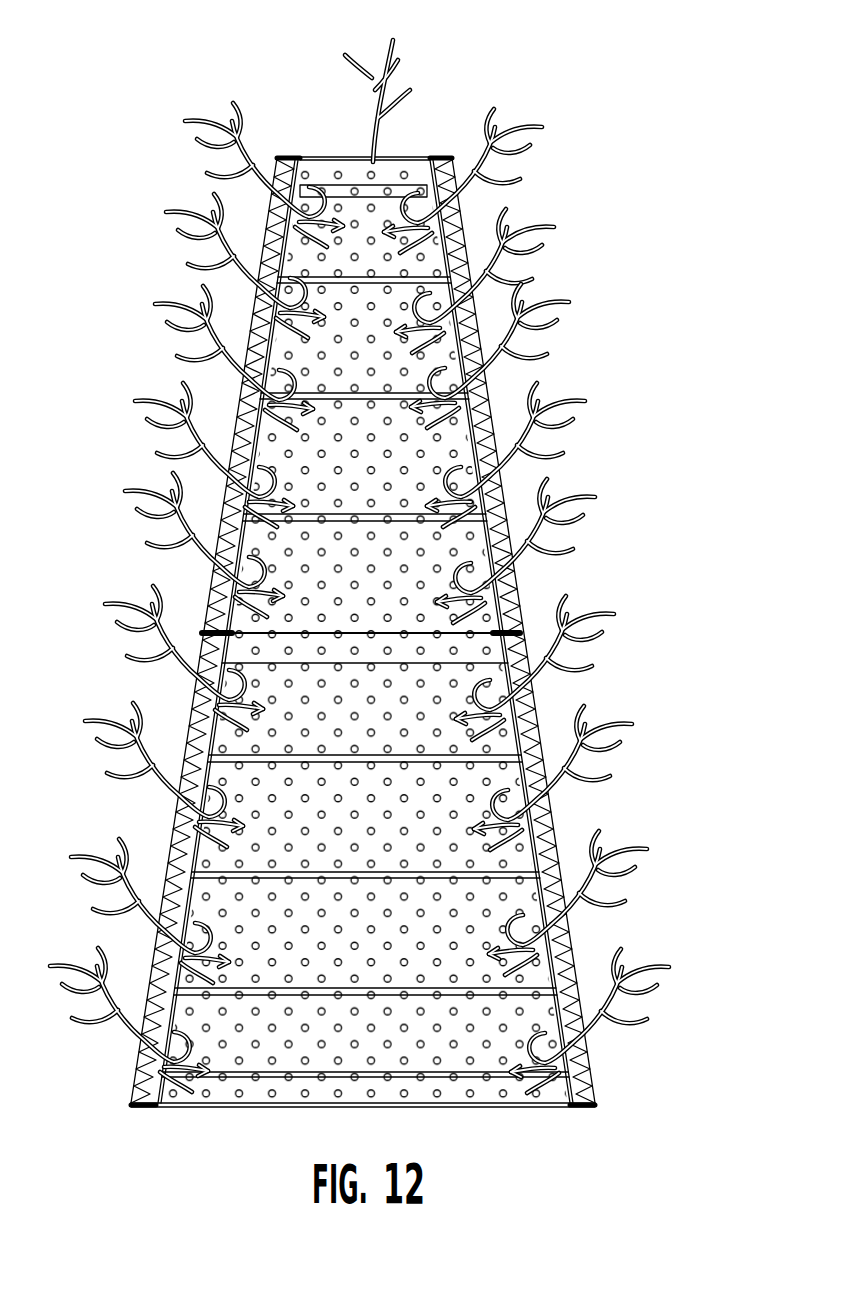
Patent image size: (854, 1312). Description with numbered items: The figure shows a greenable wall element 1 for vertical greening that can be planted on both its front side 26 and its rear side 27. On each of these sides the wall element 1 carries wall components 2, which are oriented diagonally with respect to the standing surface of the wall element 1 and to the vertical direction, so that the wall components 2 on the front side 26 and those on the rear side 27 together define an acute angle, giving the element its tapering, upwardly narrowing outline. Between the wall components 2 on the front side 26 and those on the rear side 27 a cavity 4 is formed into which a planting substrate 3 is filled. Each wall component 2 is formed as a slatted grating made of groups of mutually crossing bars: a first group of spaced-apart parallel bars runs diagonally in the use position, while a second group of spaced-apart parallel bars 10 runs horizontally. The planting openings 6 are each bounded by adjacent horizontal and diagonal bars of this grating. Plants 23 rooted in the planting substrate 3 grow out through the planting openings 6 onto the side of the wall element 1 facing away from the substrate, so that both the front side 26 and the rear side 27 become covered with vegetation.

The wall element 1 is at (314, 114).
The wall component 2 is at (265, 245).
The planting substrate 3 is at (397, 450).
The cavity 4 is at (411, 152).
The planting opening 6 is at (455, 216).
The horizontal bar 10 is at (520, 141).
The plants 23 is at (597, 631).
The front side 26 is at (679, 502).
The rear side 27 is at (106, 502).